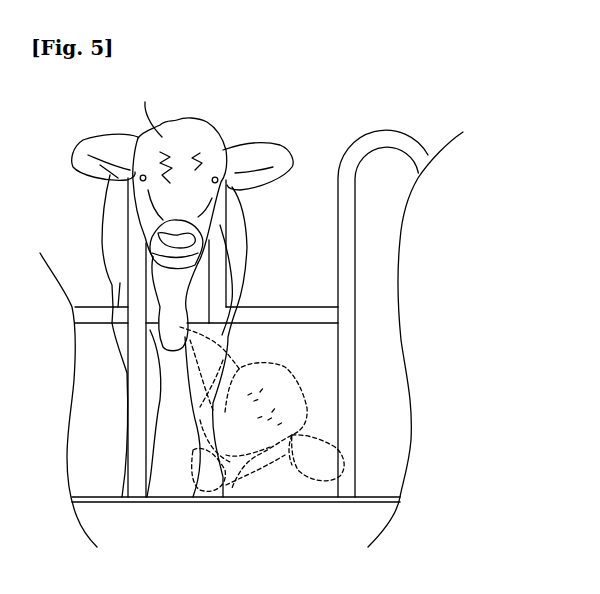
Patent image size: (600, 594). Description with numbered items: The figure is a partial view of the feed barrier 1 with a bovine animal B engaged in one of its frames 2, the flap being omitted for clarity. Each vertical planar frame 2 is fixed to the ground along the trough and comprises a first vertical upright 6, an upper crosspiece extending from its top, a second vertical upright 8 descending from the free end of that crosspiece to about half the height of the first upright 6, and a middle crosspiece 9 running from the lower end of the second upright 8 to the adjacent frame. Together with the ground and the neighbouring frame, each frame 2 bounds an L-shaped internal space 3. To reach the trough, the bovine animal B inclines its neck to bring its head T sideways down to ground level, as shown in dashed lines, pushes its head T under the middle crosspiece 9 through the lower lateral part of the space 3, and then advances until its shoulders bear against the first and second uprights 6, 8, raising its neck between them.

The feed barrier 1 is at (321, 117).
The vertical planar frame 2 is at (128, 282).
The L-shaped internal space 3 is at (327, 393).
The first vertical upright 6 is at (132, 252).
The second vertical upright 8 is at (222, 277).
The middle crosspiece 9 is at (292, 308).
The bovine animal B is at (236, 232).
The head T is at (150, 109).